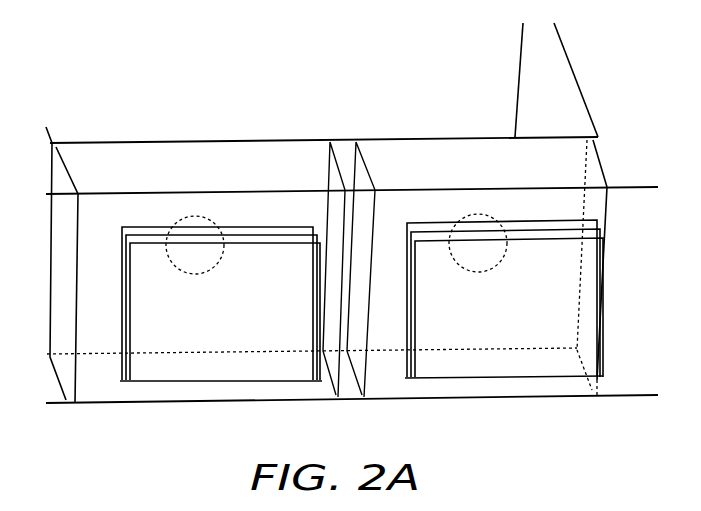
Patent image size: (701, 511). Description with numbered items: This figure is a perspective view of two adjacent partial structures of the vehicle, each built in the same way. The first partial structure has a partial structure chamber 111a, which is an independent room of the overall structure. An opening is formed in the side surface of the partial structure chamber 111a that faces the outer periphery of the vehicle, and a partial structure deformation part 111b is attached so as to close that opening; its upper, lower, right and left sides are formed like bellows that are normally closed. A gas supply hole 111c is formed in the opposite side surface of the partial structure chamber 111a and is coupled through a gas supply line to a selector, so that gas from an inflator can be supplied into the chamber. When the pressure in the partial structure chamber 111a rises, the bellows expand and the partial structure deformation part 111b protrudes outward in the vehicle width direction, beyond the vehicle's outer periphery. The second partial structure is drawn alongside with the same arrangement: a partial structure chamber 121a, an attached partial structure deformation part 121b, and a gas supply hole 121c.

The partial structure chamber 111a is at (112, 392).
The partial structure deformation part 111b is at (205, 368).
The gas supply hole 111c is at (208, 218).
The partial structure chamber 121a is at (560, 388).
The partial structure deformation part 121b is at (450, 370).
The gas supply hole 121c is at (472, 216).